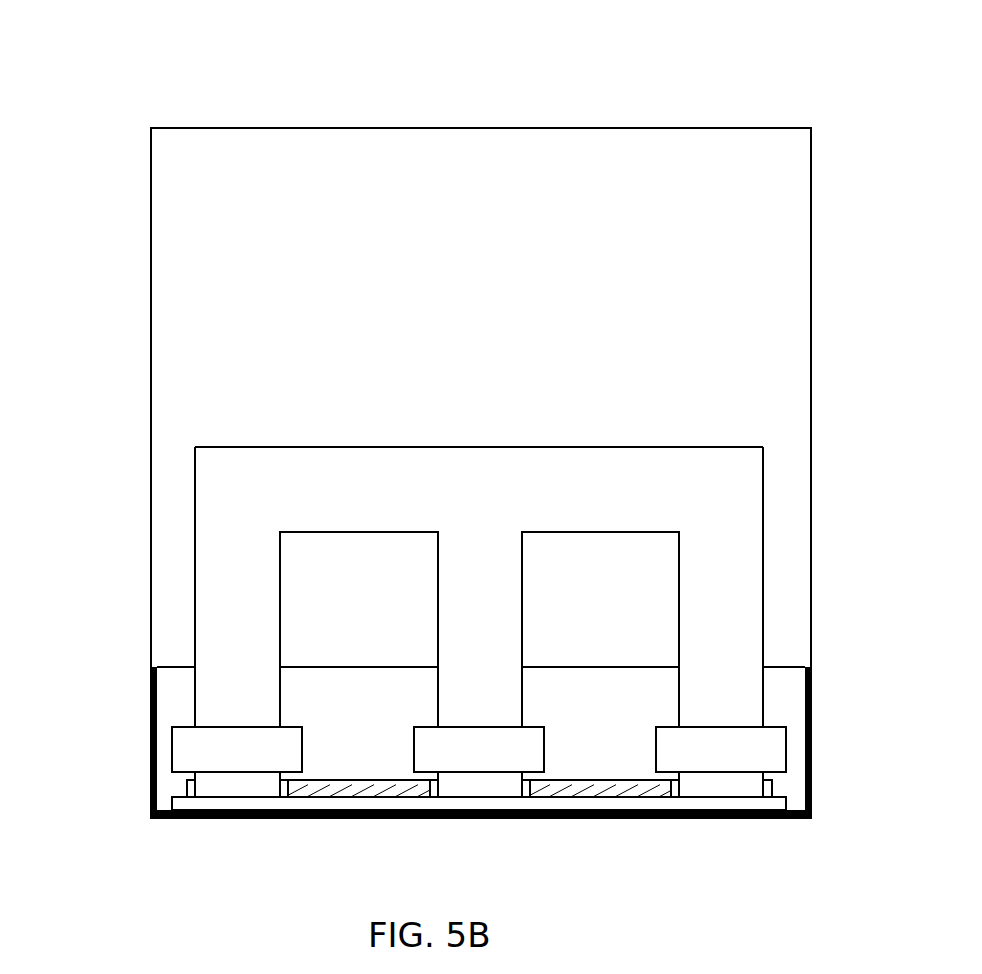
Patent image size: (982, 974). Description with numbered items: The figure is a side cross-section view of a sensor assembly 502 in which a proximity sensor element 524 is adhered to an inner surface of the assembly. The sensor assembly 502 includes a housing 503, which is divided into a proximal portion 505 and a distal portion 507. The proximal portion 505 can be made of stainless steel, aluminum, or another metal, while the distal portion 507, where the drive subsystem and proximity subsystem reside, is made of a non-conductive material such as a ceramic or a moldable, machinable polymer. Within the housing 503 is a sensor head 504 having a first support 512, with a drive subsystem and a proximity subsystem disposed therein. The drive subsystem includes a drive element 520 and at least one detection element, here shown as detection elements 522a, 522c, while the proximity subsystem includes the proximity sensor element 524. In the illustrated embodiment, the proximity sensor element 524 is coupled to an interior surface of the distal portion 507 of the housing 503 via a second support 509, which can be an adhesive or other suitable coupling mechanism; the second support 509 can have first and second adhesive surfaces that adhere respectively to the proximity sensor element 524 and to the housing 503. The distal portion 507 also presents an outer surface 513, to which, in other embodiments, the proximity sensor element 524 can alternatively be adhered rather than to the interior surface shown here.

The sensor assembly 502 is at (140, 72).
The housing 503 is at (137, 268).
The sensor head 504 is at (315, 424).
The proximal portion 505 is at (811, 375).
The distal portion 507 is at (811, 708).
The second support 509 is at (782, 803).
The first support 512 is at (501, 461).
The outer surface 513 is at (483, 819).
The drive element 520 is at (535, 725).
The detection element 522a is at (655, 750).
The detection element 522c is at (290, 727).
The proximity sensor element 524 is at (350, 780).